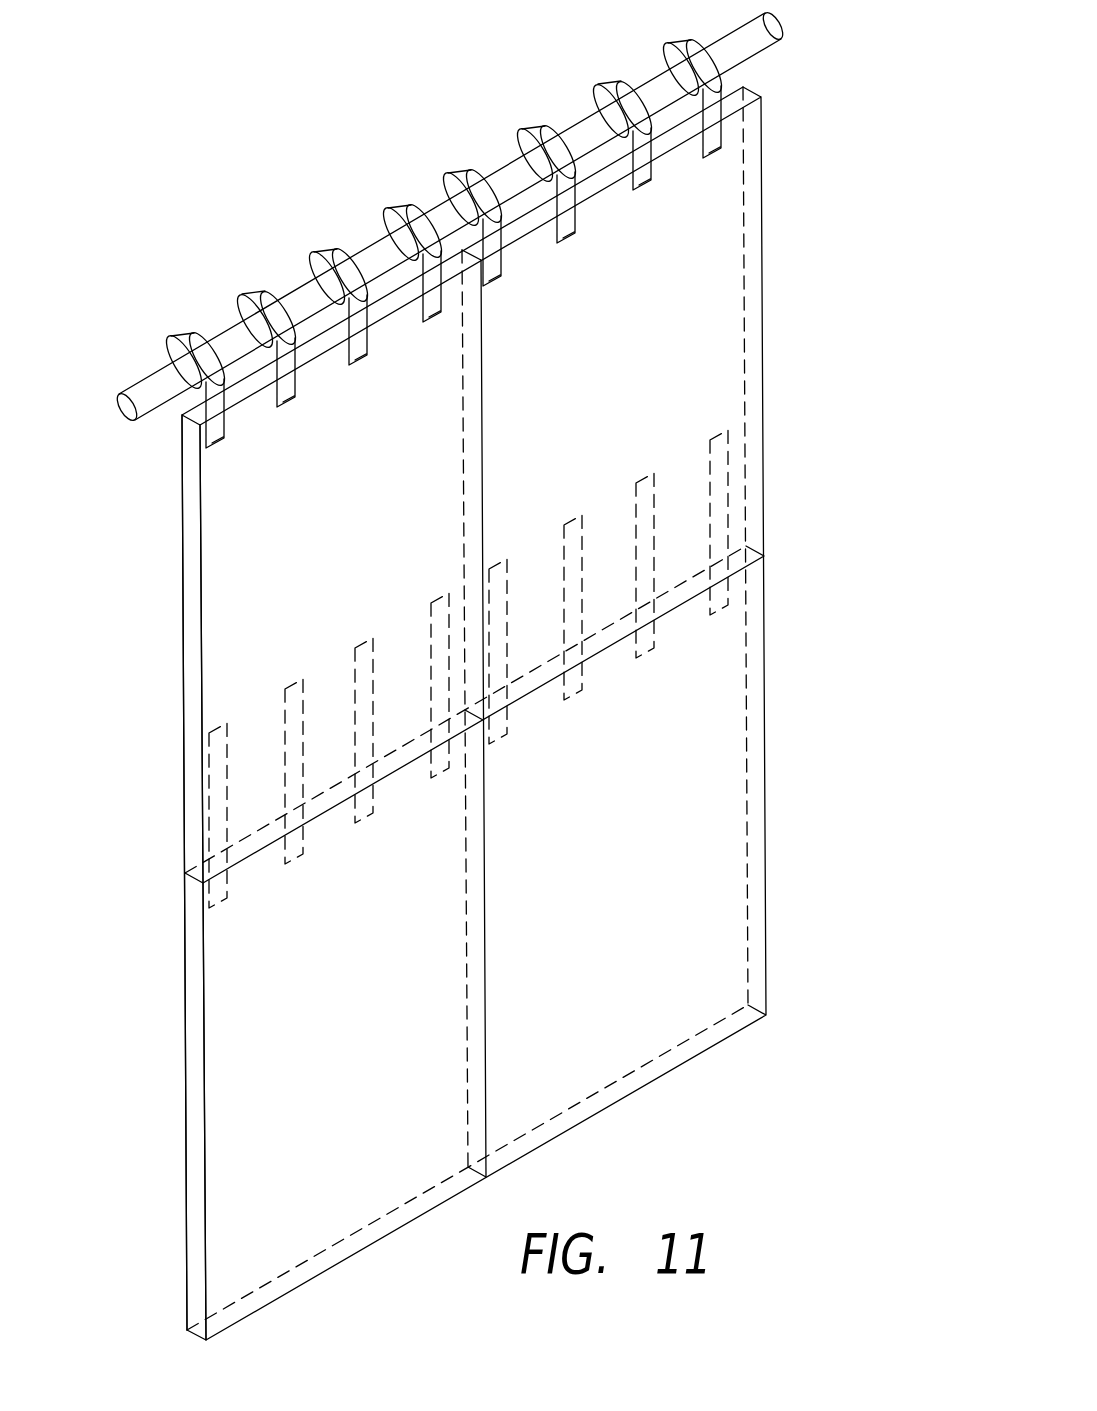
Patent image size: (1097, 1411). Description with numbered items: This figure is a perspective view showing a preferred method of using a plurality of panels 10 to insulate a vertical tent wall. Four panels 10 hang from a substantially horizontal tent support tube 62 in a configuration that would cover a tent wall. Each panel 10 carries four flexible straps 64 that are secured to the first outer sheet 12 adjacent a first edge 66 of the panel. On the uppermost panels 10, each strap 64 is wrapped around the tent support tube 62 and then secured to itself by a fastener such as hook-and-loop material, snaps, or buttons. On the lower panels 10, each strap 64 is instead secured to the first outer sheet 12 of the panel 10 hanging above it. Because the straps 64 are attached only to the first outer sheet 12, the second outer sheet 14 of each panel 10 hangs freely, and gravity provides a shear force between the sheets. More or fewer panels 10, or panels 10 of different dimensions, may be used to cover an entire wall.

The panel 10 is at (645, 308).
The first outer sheet 12 is at (258, 506).
The second outer sheet 14 is at (243, 552).
The tent support tube 62 is at (128, 408).
The flexible strap 64 is at (660, 56).
The first edge 66 is at (508, 198).